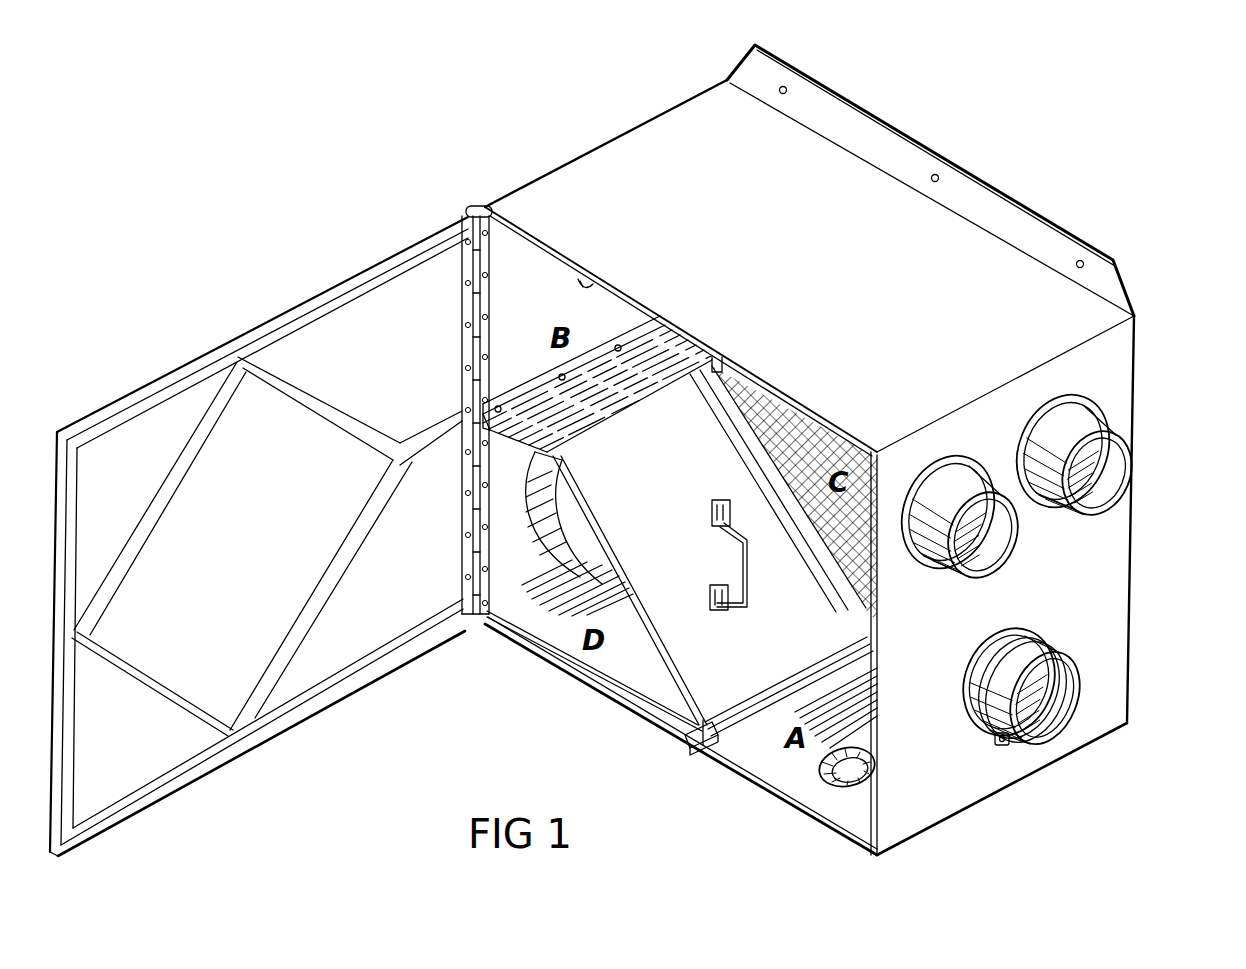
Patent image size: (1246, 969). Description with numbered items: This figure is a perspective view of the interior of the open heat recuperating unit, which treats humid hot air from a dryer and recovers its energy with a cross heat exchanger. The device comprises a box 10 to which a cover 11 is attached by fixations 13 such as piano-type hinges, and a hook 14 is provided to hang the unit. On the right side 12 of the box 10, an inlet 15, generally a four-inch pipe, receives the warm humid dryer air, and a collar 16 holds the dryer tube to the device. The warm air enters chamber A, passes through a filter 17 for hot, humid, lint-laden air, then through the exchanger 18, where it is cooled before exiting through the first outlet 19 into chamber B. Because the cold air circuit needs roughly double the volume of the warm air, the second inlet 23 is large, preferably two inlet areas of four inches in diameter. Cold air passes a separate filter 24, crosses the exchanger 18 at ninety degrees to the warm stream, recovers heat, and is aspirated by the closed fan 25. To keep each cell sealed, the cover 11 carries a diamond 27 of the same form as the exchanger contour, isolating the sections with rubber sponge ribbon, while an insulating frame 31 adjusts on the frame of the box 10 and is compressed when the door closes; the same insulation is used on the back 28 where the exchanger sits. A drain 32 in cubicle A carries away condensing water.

The box 10 is at (890, 210).
The cover 11 is at (382, 313).
The right side 12 is at (1088, 587).
The fixations 13 is at (466, 210).
The hook 14 is at (1028, 230).
The inlet 15 is at (1060, 700).
The collar 16 is at (1050, 647).
The filter 17 is at (706, 748).
The exchanger 18 is at (717, 632).
The first outlet 19 is at (584, 277).
The second inlet 23 is at (1093, 430).
The filter 24 is at (827, 590).
The fan 25 is at (587, 557).
The diamond 27 is at (248, 362).
The back 28 is at (1133, 477).
The frame 31 is at (153, 403).
The drain 32 is at (767, 746).